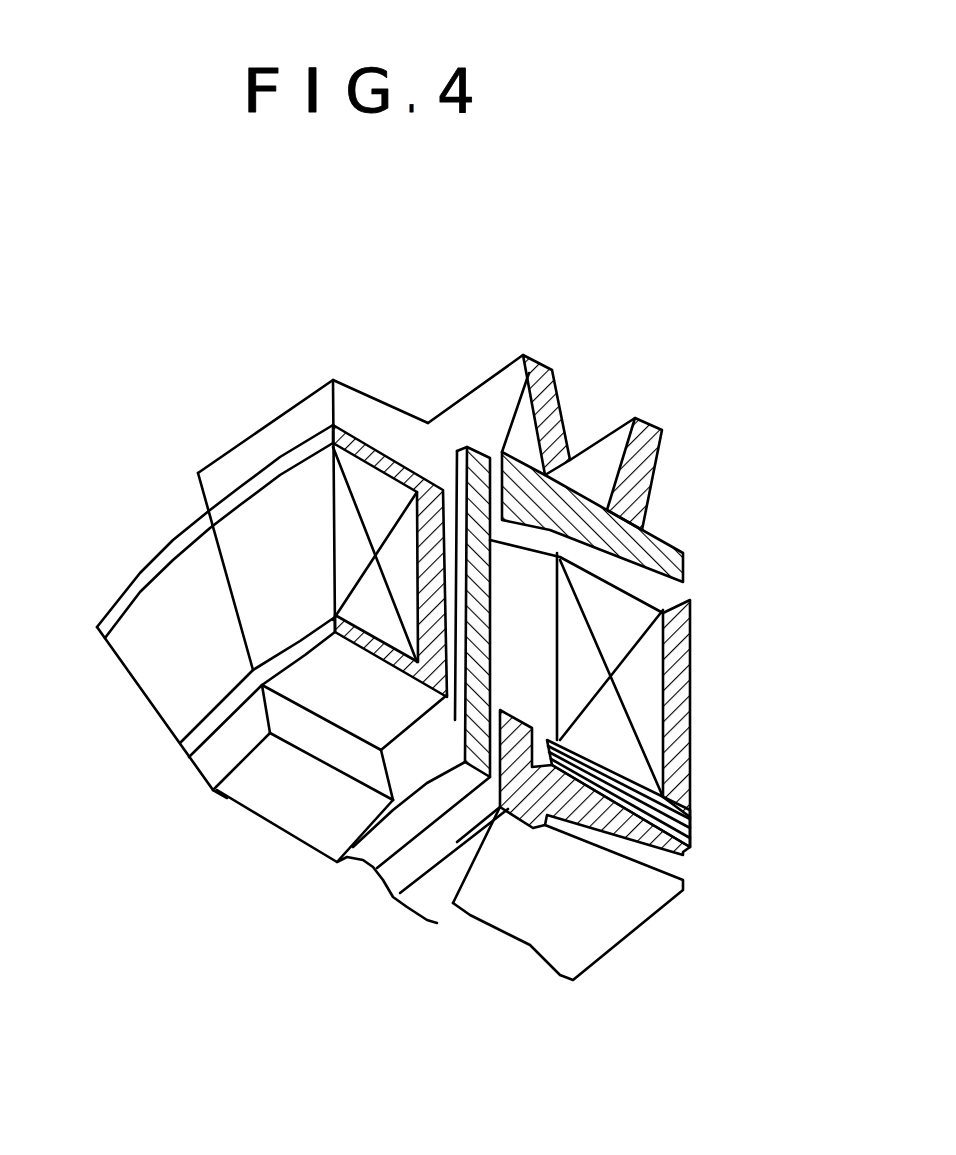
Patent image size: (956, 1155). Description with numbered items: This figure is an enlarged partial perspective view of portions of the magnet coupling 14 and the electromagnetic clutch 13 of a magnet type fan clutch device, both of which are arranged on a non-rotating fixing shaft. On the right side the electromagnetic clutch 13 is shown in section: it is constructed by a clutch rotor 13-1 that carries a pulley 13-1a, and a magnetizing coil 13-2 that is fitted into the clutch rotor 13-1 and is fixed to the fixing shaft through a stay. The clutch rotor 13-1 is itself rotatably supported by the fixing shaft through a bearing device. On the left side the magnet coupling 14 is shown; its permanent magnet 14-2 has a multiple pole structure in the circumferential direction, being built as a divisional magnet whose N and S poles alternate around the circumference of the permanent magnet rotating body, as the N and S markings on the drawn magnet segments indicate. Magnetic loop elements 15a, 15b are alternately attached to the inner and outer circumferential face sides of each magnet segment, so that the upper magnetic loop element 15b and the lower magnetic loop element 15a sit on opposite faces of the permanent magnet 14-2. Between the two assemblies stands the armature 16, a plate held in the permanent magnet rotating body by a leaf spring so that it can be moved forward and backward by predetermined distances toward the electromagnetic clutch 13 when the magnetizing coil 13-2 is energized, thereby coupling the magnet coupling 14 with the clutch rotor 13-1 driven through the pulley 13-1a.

The electromagnetic clutch 13 is at (598, 407).
The clutch rotor 13-1 is at (670, 550).
The pulley 13-1a is at (643, 428).
The magnetizing coil 13-2 is at (647, 684).
The magnet coupling 14 is at (386, 390).
The permanent magnet 14-2 is at (243, 550).
The magnetic loop element 15a is at (292, 813).
The magnetic loop element 15b is at (257, 447).
The armature 16 is at (477, 457).